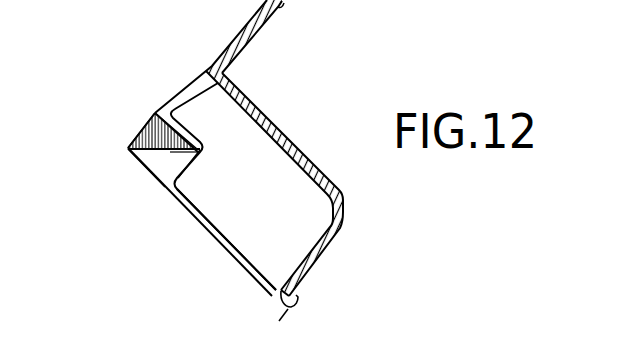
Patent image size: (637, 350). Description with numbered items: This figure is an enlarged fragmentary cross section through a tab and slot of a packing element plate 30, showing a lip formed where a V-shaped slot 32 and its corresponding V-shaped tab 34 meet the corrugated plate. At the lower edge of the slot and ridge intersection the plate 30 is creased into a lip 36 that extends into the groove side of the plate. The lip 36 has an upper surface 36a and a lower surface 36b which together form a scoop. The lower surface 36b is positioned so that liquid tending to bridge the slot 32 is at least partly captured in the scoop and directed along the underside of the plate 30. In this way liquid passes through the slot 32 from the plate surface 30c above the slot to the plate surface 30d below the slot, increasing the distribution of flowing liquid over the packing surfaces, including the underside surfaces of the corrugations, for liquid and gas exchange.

The packing element plate 30 is at (241, 41).
The plate surface above the slot 30c is at (205, 213).
The plate surface below the slot 30d is at (181, 203).
The V-shaped slot 32 is at (269, 290).
The V-shaped tab 34 is at (305, 160).
The lip 36 is at (118, 157).
The upper surface of the lip 36a is at (155, 131).
The lower surface of the lip 36b is at (157, 167).